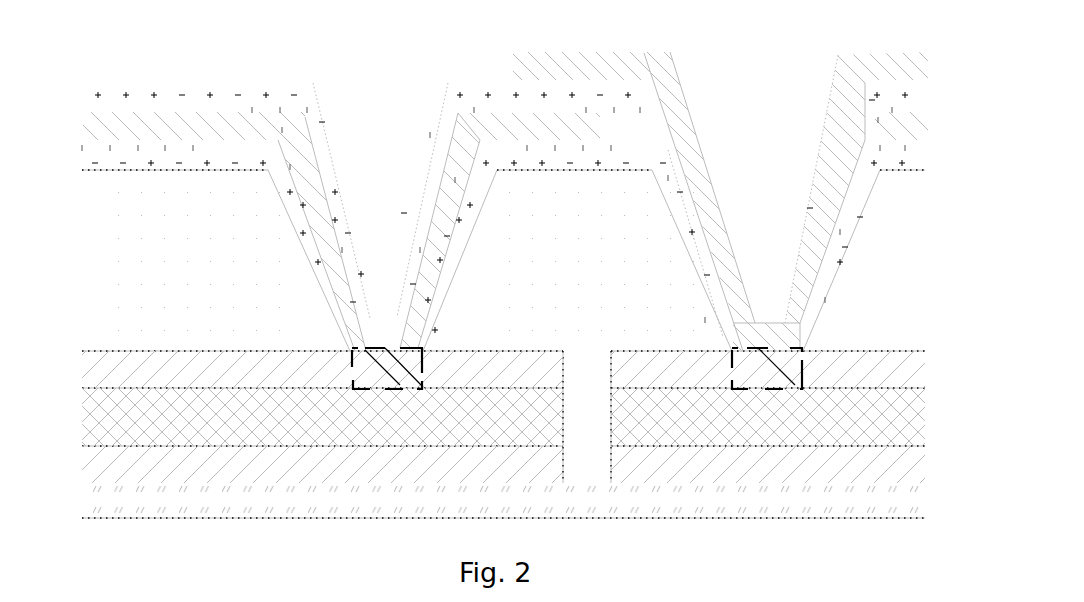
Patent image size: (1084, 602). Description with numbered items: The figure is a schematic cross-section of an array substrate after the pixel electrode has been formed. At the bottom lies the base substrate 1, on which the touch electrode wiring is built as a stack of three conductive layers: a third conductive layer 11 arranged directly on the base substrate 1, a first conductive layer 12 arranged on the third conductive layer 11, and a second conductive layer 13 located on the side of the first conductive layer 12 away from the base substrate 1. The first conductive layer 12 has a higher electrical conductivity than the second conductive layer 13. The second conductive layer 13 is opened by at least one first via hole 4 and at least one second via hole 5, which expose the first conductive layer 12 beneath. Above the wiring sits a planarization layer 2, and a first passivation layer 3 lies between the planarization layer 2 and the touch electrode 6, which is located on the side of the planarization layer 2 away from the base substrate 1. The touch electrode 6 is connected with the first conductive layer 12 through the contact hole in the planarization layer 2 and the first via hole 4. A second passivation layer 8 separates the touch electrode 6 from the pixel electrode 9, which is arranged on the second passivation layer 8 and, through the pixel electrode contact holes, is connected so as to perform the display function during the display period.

The base substrate 1 is at (913, 500).
The planarization layer 2 is at (95, 285).
The first passivation layer 3 is at (92, 158).
The first via hole 4 is at (429, 349).
The second via hole 5 is at (806, 350).
The touch electrode 6 is at (92, 125).
The second passivation layer 8 is at (97, 94).
The pixel electrode 9 is at (912, 64).
The third conductive layer 11 is at (88, 453).
The first conductive layer 12 is at (88, 408).
The second conductive layer 13 is at (88, 367).